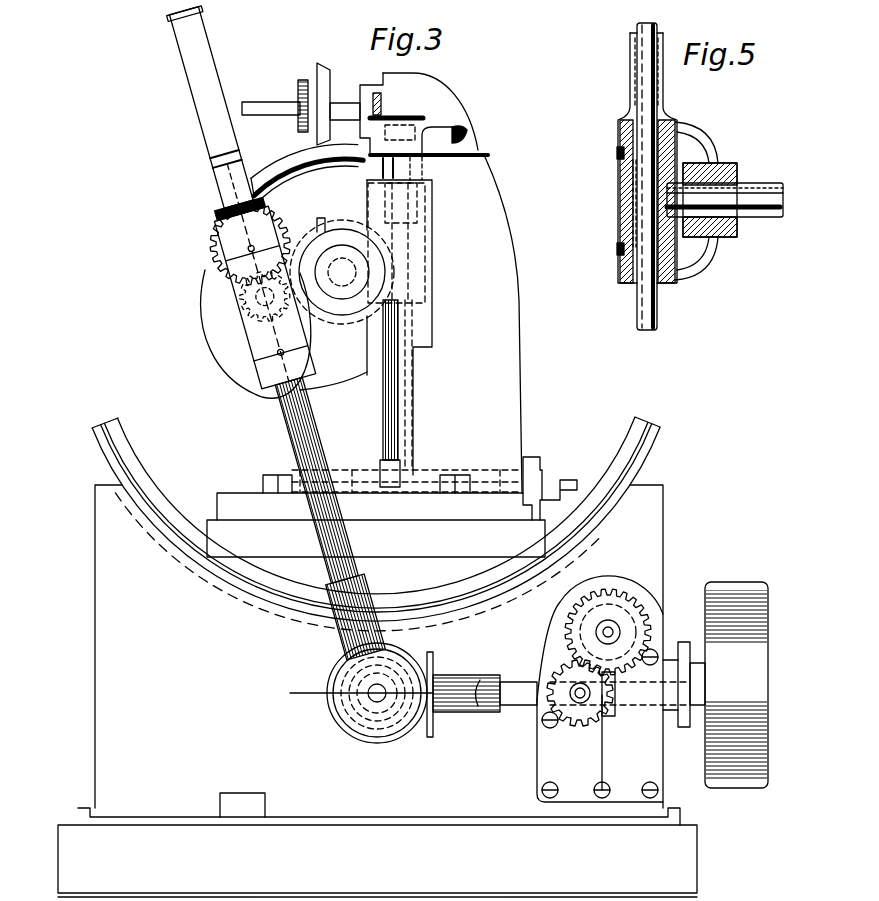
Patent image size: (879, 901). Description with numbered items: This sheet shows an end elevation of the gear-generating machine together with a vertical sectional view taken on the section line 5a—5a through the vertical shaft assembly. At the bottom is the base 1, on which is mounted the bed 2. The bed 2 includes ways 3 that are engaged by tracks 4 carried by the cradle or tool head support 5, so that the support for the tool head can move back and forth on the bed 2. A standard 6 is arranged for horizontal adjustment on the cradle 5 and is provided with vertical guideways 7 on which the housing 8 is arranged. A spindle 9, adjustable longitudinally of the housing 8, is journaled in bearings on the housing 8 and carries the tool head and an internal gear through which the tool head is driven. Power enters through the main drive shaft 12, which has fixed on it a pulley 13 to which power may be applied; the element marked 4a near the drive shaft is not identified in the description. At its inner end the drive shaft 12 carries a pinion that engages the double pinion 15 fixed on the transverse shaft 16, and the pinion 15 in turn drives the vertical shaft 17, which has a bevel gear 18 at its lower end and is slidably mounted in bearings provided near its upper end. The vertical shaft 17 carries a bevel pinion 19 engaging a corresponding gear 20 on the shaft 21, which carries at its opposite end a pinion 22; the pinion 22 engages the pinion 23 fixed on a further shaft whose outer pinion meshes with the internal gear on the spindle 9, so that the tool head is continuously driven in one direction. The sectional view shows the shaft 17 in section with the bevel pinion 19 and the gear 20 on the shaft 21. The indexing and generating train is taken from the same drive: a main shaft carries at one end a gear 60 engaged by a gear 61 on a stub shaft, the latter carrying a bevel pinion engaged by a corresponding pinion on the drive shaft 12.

In FIG. 3, the base 1 is at (377, 845).
In FIG. 3, the bed 2 is at (120, 668).
In FIG. 3, the ways 3 is at (153, 542).
In FIG. 3, the tracks 4 is at (640, 452).
In FIG. 3, the shaft 4a is at (396, 693).
In FIG. 3, the cradle or tool head support 5 is at (392, 507).
In FIG. 3, the section line 5a is at (213, 112).
In FIG. 3, the standard 6 is at (504, 395).
In FIG. 3, the vertical guideways 7 is at (395, 390).
In FIG. 3, the housing 8 is at (368, 320).
In FIG. 3, the spindle 9 is at (345, 272).
In FIG. 3, the main drive shaft 12 is at (630, 690).
In FIG. 3, the pulley 13 is at (715, 685).
In FIG. 3, the double pinion 15 is at (360, 733).
In FIG. 3, the transverse shaft 16 is at (375, 695).
In FIG. 3, the vertical shaft 17 is at (292, 460).
In FIG. 5, the vertical shaft 17 is at (658, 314).
In FIG. 3, the bevel gear 18 is at (443, 668).
In FIG. 5, the bevel pinion 19 is at (627, 227).
In FIG. 5, the gear 20 is at (655, 176).
In FIG. 3, the shaft 21 is at (262, 310).
In FIG. 5, the shaft 21 is at (750, 198).
In FIG. 3, the pinion 22 is at (245, 300).
In FIG. 3, the pinion 23 is at (232, 248).
In FIG. 3, the gear 60 is at (612, 606).
In FIG. 3, the gear 61 is at (572, 724).